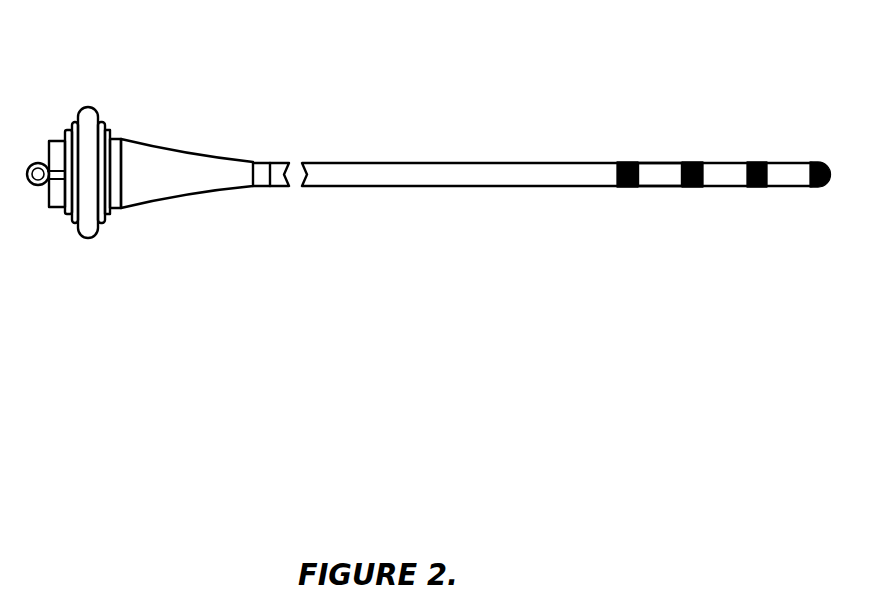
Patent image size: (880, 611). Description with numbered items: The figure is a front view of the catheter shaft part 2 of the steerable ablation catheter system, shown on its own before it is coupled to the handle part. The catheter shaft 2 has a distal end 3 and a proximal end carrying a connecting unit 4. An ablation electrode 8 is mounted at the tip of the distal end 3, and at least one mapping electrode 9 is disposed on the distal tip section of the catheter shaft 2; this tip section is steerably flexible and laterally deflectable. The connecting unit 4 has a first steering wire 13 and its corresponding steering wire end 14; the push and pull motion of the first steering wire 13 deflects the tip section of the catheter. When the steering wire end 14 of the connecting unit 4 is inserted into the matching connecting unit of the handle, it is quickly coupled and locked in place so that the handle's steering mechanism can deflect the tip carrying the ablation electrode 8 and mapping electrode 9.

The catheter shaft 2 is at (438, 162).
The distal end 3 is at (663, 162).
The connecting unit 4 is at (51, 207).
The ablation electrode 8 is at (820, 190).
The mapping electrode 9 is at (622, 190).
The first steering wire 13 is at (57, 182).
The steering wire end 14 is at (37, 193).